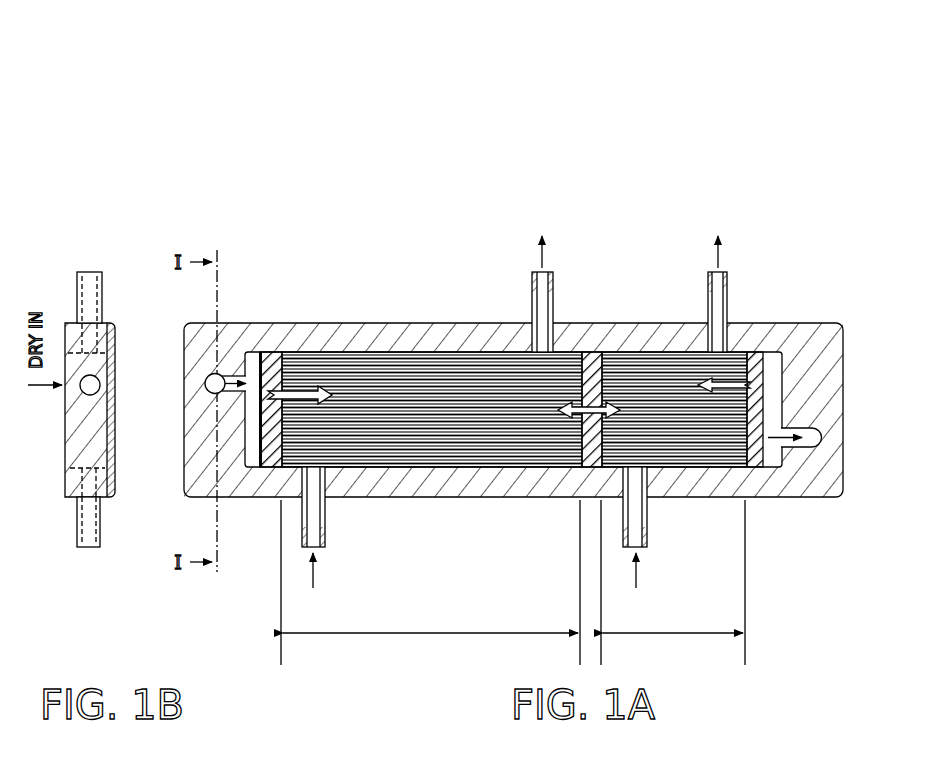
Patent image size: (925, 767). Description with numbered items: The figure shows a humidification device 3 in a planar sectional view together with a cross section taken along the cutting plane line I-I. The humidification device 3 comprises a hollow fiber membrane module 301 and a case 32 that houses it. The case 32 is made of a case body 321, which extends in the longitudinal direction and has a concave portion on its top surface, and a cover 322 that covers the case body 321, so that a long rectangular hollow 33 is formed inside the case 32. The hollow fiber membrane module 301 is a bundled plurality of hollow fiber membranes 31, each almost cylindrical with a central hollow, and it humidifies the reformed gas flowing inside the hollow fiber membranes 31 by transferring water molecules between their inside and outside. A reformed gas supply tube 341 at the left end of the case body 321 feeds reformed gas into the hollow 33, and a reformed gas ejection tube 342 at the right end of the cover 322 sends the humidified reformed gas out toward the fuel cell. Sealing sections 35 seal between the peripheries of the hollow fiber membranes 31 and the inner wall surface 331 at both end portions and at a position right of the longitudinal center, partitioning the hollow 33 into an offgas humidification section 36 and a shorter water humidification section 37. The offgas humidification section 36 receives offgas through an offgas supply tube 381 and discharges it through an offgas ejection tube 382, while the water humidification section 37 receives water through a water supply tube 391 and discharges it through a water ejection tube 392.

In FIG. 1A, the humidification device 3 is at (514, 321).
In FIG. 1A, the hollow fiber membrane module 301 is at (501, 322).
In FIG. 1A, the hollow fiber membranes 31 is at (385, 355).
In FIG. 1A, the case 32 is at (513, 374).
In FIG. 1B, the case 32 is at (127, 480).
In FIG. 1A, the case body 321 is at (266, 333).
In FIG. 1B, the case body 321 is at (103, 500).
In FIG. 1B, the cover 322 is at (112, 500).
In FIG. 1A, the hollow 33 is at (252, 362).
In FIG. 1B, the hollow 33 is at (72, 494).
In FIG. 1A, the inner wall surface 331 is at (468, 352).
In FIG. 1A, the reformed gas supply tube 341 is at (212, 376).
In FIG. 1B, the reformed gas supply tube 341 is at (88, 376).
In FIG. 1A, the reformed gas ejection tube 342 is at (814, 447).
In FIG. 1A, the sealing sections 35 is at (772, 151).
In FIG. 1A, the offgas humidification section 36 is at (430, 582).
In FIG. 1A, the water humidification section 37 is at (673, 582).
In FIG. 1A, the offgas supply tube 381 is at (320, 538).
In FIG. 1B, the offgas supply tube 381 is at (88, 548).
In FIG. 1A, the offgas ejection tube 382 is at (538, 282).
In FIG. 1B, the offgas ejection tube 382 is at (92, 272).
In FIG. 1A, the water supply tube 391 is at (640, 538).
In FIG. 1A, the water ejection tube 392 is at (712, 276).